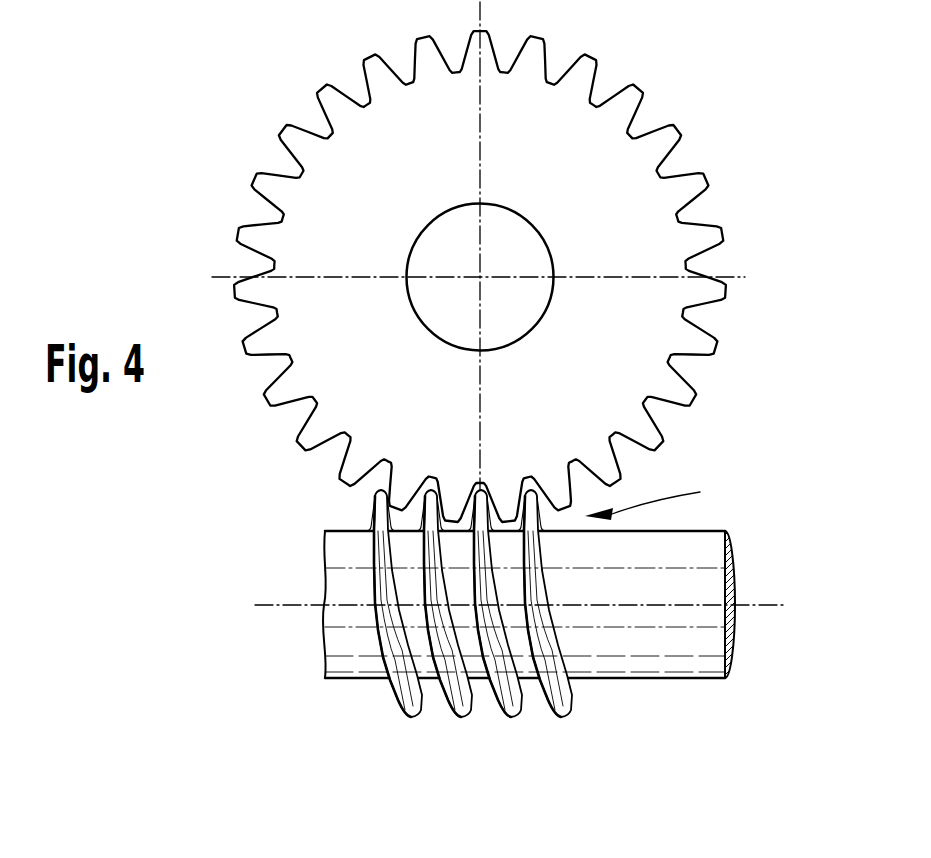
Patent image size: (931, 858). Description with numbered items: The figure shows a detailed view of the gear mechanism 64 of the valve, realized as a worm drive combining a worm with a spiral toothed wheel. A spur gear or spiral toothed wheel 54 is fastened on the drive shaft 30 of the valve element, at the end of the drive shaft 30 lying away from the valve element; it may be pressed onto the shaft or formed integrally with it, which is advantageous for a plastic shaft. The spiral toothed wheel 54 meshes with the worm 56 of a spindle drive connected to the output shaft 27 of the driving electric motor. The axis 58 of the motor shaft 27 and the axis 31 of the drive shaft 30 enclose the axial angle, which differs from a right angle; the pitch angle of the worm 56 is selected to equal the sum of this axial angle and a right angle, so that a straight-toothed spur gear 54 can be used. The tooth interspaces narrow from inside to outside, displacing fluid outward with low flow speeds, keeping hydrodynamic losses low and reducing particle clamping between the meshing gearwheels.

The spiral toothed wheel 54 is at (598, 148).
The drive shaft 30 is at (452, 244).
The axis of the drive shaft 31 is at (480, 277).
The output shaft 27 is at (652, 643).
The worm 56 is at (462, 690).
The axis of the motor shaft 58 is at (775, 607).
The gear mechanism 64 is at (658, 495).